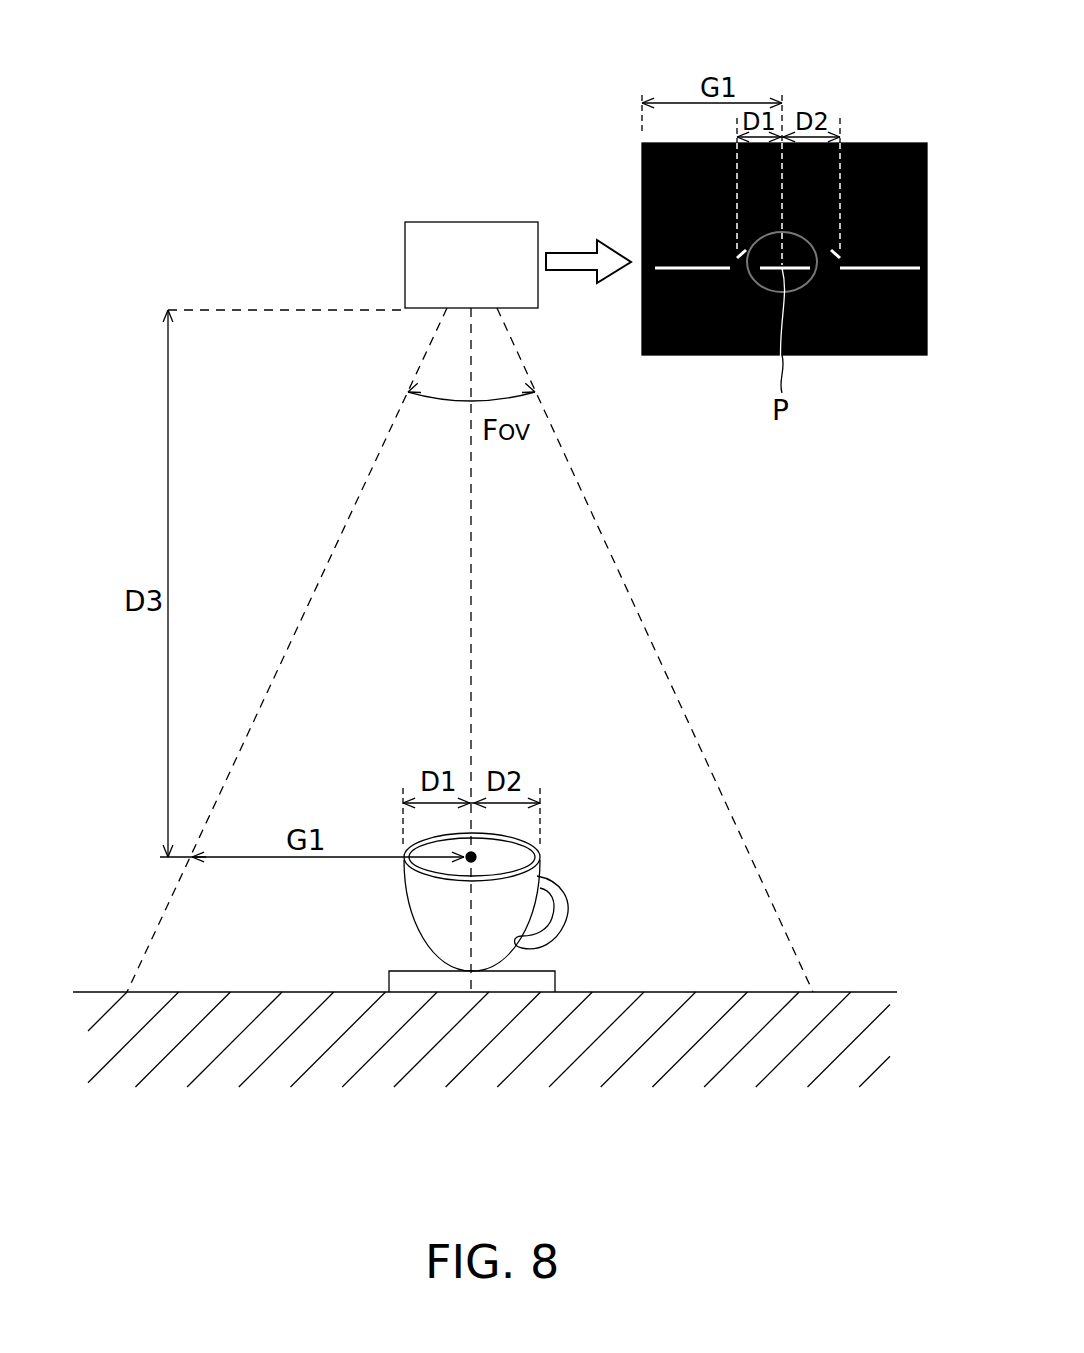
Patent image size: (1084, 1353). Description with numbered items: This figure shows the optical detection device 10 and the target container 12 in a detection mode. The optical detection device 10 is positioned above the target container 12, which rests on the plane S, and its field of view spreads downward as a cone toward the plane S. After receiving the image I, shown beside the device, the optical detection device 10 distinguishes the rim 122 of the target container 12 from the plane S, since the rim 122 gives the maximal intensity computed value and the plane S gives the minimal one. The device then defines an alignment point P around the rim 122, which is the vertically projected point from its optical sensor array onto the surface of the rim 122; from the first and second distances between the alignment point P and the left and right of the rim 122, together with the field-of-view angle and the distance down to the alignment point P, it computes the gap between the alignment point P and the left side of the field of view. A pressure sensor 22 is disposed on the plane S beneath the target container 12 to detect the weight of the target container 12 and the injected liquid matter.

The optical detection device 10 is at (488, 282).
The target container 12 is at (488, 937).
The rim 122 is at (542, 857).
The pressure sensor 22 is at (555, 985).
The alignment point P is at (470, 863).
The plane S is at (880, 990).
The image I is at (893, 143).